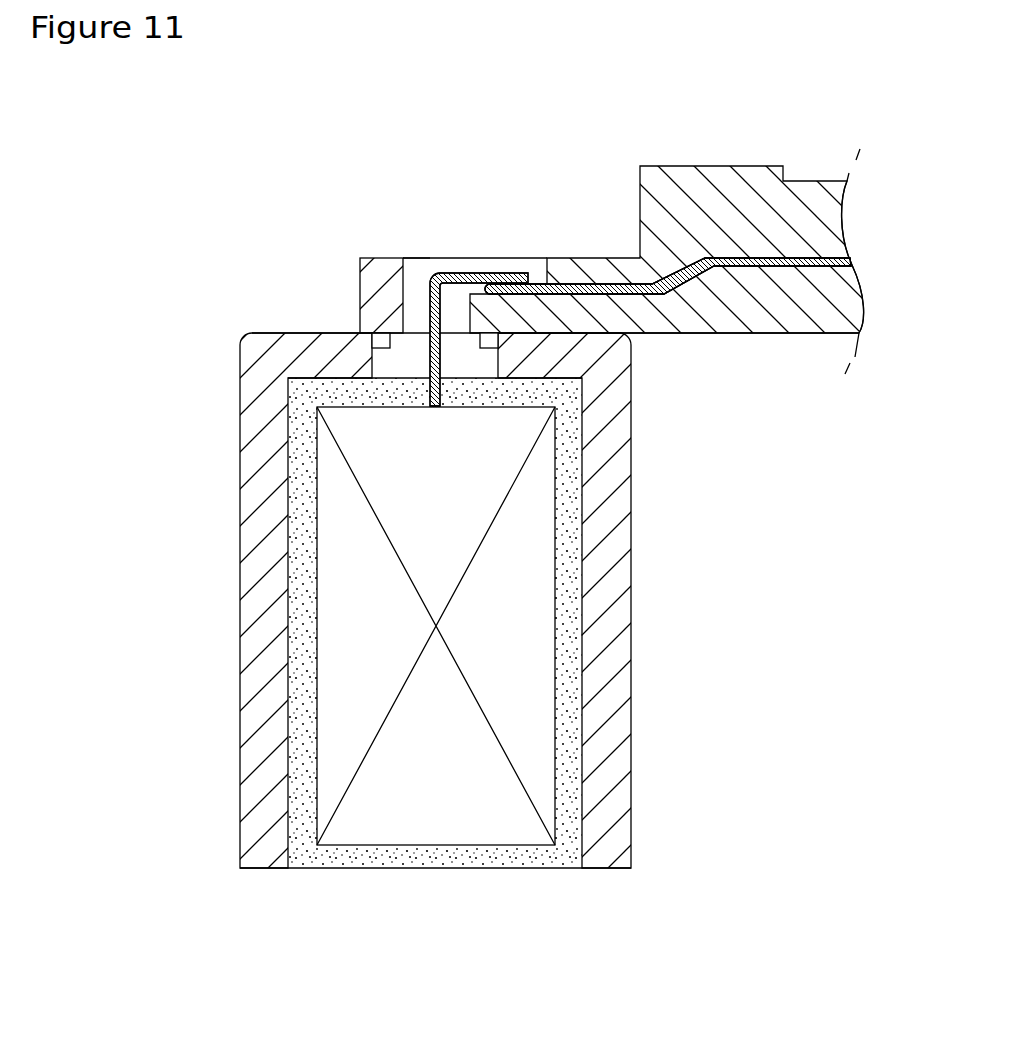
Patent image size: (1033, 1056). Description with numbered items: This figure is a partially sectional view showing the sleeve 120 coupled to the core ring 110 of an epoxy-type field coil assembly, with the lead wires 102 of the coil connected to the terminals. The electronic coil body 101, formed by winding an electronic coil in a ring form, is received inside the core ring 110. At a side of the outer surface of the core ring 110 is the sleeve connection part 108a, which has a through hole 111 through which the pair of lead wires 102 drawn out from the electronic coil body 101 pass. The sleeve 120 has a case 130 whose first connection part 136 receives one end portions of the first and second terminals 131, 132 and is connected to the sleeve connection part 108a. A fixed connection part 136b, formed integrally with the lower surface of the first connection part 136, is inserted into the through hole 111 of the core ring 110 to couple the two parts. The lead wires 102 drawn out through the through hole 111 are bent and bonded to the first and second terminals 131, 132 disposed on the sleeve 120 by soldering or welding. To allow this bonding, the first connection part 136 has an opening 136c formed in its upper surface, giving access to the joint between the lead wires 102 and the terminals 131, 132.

The electronic coil body 101 is at (341, 623).
The lead wires 102 is at (480, 273).
The sleeve connection part 108a is at (274, 310).
The core ring 110 is at (262, 646).
The through hole 111 is at (378, 366).
The sleeve 120 is at (667, 310).
The case 130 is at (713, 340).
The first terminal 131 is at (732, 262).
The second terminal 132 is at (732, 262).
The first connection part 136 is at (387, 280).
The fixed connection part 136b is at (387, 380).
The opening 136c is at (418, 277).